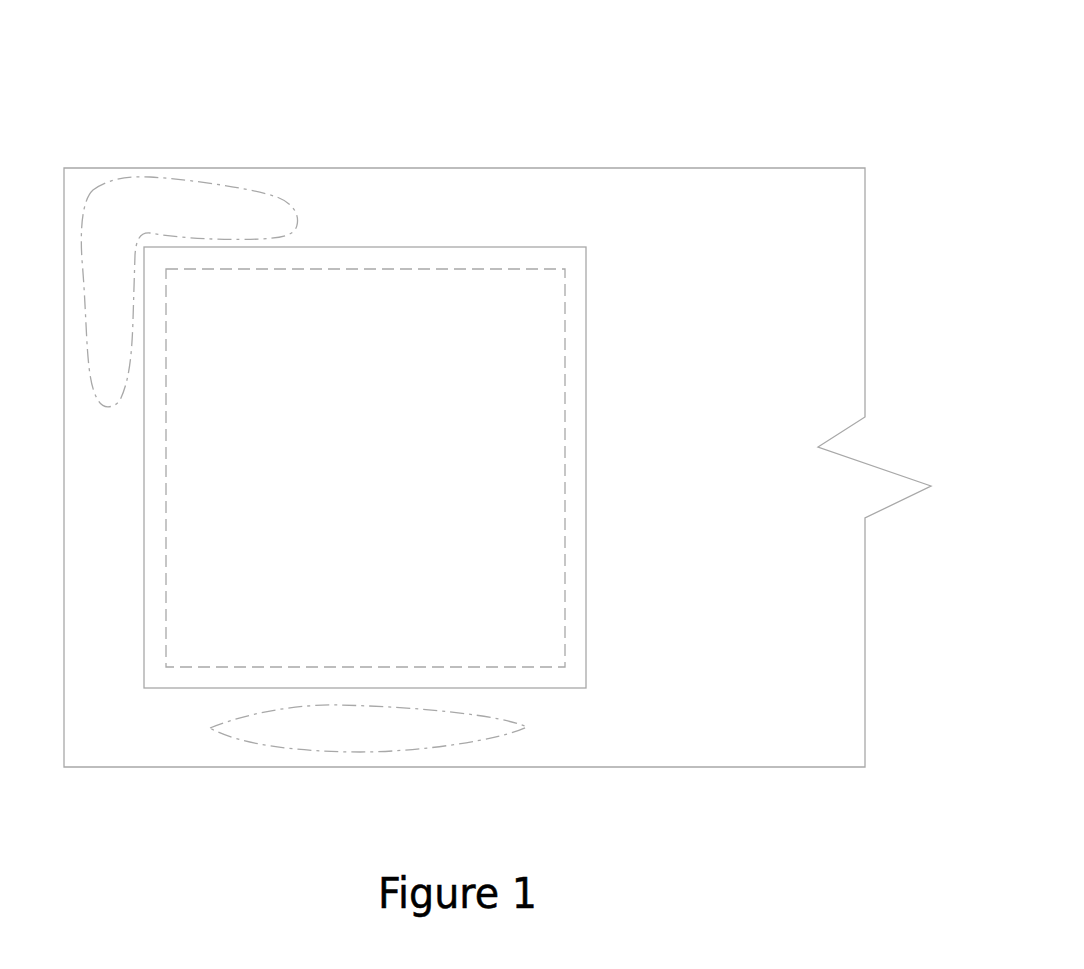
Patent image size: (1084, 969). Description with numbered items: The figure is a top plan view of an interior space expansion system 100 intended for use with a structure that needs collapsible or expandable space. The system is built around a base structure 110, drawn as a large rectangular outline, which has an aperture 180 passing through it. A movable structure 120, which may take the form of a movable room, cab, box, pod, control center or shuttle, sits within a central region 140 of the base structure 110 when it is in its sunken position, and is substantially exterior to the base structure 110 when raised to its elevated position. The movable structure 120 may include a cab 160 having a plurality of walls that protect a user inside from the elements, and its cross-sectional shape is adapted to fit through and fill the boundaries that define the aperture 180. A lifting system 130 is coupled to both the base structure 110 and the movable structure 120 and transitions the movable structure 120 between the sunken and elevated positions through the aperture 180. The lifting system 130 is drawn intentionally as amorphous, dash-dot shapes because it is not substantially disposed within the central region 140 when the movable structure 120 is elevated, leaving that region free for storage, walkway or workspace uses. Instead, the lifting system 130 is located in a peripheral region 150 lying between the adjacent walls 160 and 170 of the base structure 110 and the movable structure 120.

The interior space expansion system 100 is at (670, 100).
The base structure 110 is at (818, 170).
The movable structure 120 is at (385, 408).
The lifting system 130 is at (212, 180).
The central region 140 is at (385, 538).
The peripheral region 150 is at (373, 178).
The cab 160 is at (183, 668).
The wall 170 is at (167, 767).
The aperture 180 is at (565, 455).